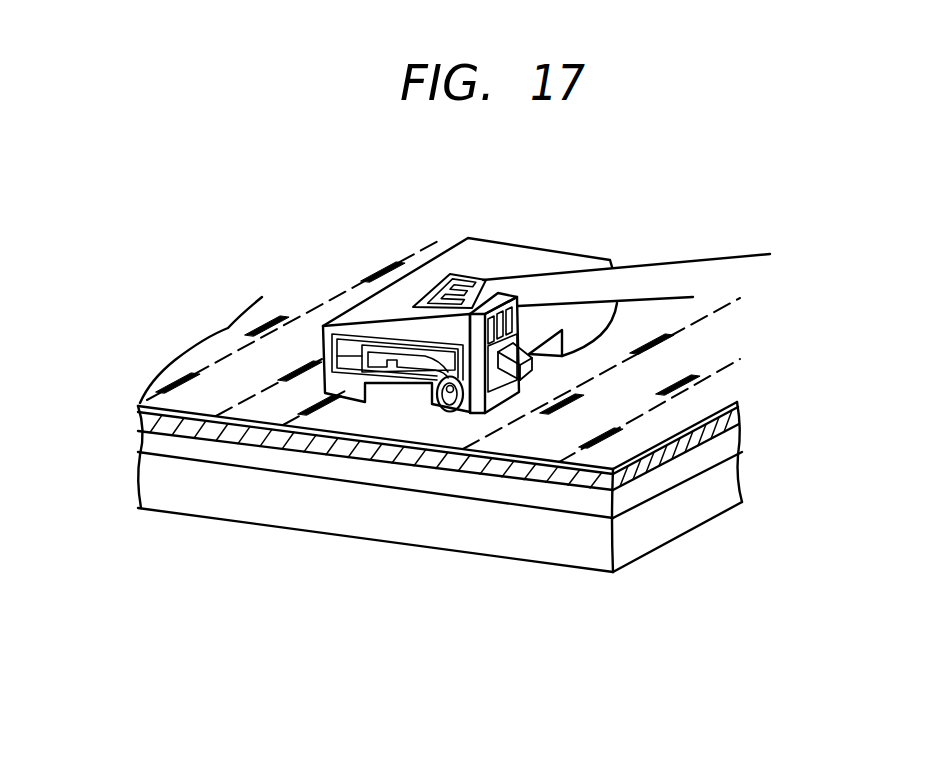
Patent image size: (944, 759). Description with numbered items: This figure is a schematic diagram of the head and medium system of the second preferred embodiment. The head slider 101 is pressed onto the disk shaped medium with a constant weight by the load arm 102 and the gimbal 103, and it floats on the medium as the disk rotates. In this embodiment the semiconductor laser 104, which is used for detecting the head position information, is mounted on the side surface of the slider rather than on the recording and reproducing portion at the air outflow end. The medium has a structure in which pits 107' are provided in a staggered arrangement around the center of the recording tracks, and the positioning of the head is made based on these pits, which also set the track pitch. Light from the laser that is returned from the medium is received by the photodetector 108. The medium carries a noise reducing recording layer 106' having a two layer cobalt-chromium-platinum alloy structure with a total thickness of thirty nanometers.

The head slider 101 is at (490, 257).
The load arm 102 is at (642, 278).
The gimbal 103 is at (443, 283).
The semiconductor laser 104 is at (493, 406).
The recording layer 106' is at (401, 449).
The pits 107' is at (467, 351).
The photodetector 108 is at (523, 362).